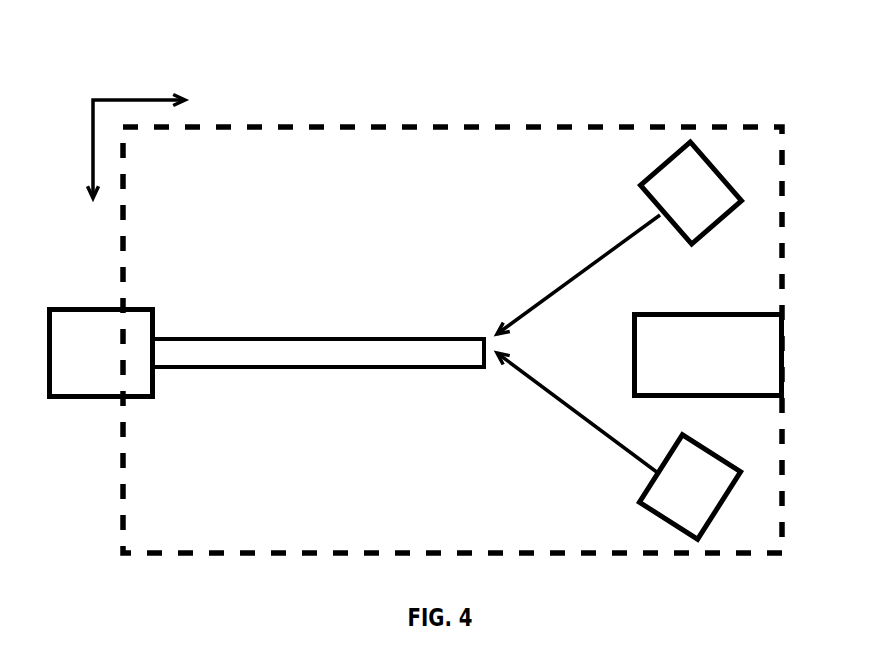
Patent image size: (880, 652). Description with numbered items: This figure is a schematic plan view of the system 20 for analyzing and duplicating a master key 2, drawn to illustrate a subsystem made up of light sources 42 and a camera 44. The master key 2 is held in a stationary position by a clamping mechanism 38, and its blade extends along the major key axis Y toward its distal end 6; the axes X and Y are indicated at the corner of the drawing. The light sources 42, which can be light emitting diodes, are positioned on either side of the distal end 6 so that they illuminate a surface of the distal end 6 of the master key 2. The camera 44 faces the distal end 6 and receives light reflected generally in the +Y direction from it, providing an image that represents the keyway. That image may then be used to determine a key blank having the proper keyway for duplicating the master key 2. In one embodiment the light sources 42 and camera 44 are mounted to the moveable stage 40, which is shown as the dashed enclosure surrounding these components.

The system 20 is at (598, 78).
The moveable stage 40 is at (438, 127).
The light sources 42 is at (661, 192).
The camera 44 is at (755, 340).
The clamping mechanism 38 is at (130, 397).
The master key 2 is at (318, 348).
The distal end 6 is at (483, 350).